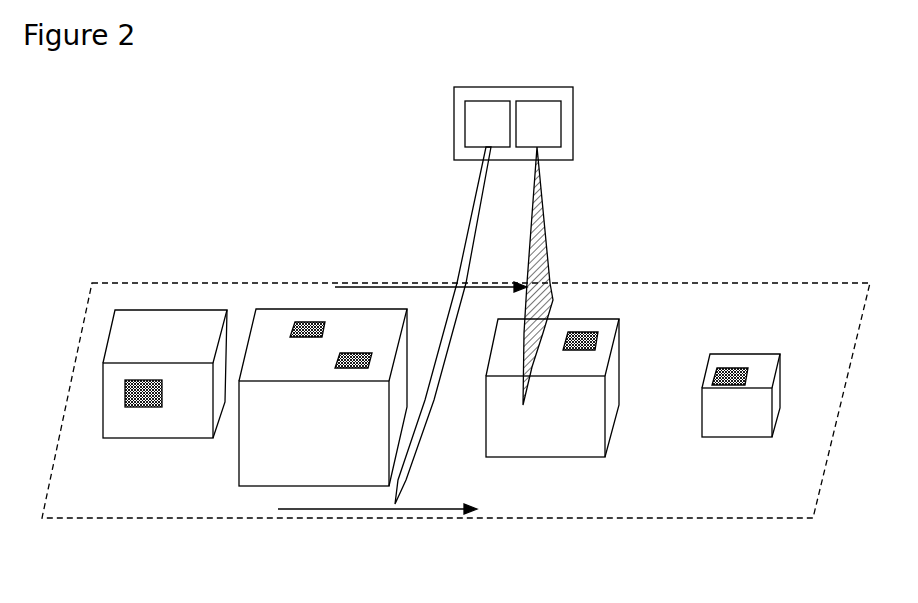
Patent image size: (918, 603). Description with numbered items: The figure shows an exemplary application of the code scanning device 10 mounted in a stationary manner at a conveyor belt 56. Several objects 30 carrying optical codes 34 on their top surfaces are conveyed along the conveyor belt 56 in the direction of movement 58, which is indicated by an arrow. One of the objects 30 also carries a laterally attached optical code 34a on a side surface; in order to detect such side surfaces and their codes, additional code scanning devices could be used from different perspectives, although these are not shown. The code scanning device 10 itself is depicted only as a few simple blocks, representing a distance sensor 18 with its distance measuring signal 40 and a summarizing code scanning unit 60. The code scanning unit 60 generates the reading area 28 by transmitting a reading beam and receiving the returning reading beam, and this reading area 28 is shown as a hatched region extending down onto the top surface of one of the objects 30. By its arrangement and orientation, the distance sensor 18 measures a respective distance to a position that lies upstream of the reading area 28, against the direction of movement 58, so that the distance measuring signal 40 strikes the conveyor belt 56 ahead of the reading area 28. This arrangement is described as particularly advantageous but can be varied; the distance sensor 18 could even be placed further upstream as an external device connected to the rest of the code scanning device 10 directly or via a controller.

The code scanning device 10 is at (553, 101).
The distance sensor 18 is at (452, 302).
The code scanning unit 60 is at (573, 124).
The reading area 28 is at (605, 276).
The distance measuring signal 40 is at (431, 257).
The object 30 is at (414, 367).
The optical code 34 is at (519, 311).
The laterally attached optical code 34a is at (129, 427).
The direction of movement 58 is at (377, 537).
The conveyor belt 56 is at (456, 425).